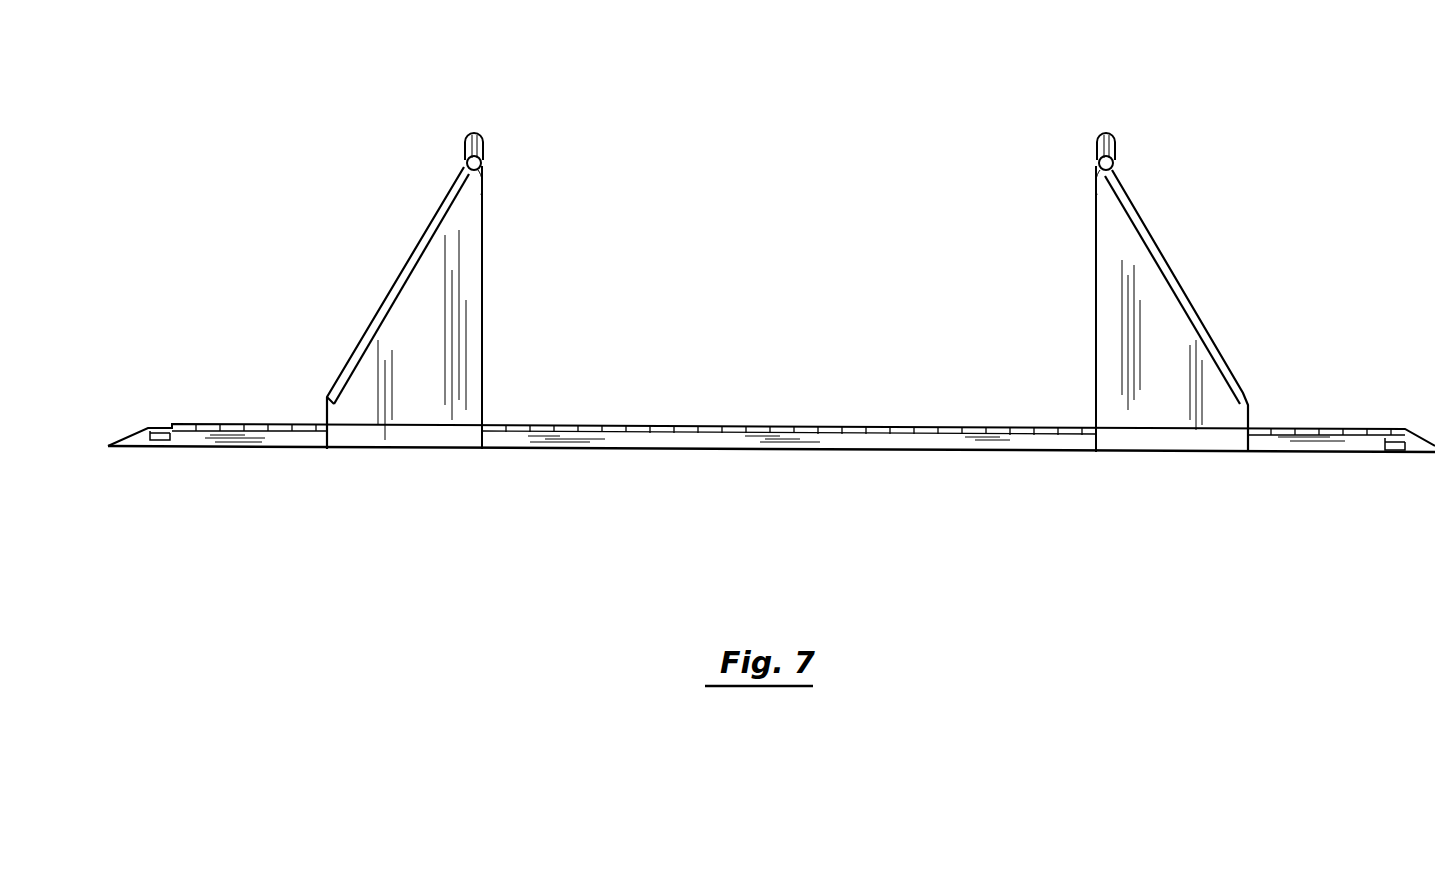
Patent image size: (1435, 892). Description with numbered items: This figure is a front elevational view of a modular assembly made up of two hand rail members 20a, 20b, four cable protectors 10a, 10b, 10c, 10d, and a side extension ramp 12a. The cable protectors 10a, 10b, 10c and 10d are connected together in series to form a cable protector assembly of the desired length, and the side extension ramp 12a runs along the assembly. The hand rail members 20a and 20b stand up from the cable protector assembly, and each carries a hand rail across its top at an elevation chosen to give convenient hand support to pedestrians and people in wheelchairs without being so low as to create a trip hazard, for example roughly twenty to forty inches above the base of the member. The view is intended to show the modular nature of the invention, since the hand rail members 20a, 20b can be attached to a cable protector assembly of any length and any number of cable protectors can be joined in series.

The cable protector 10a is at (222, 458).
The cable protector 10b is at (625, 422).
The cable protector 10c is at (930, 426).
The cable protector 10d is at (1328, 460).
The side extension ramp 12a is at (855, 453).
The hand rail member 20a is at (377, 244).
The hand rail member 20b is at (1168, 246).